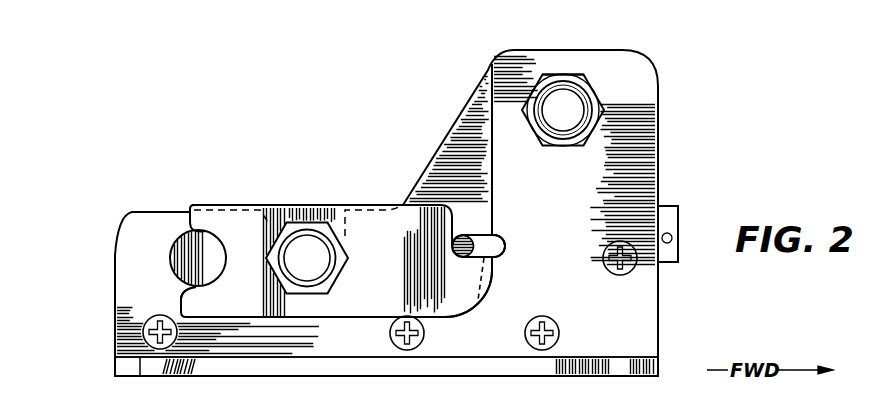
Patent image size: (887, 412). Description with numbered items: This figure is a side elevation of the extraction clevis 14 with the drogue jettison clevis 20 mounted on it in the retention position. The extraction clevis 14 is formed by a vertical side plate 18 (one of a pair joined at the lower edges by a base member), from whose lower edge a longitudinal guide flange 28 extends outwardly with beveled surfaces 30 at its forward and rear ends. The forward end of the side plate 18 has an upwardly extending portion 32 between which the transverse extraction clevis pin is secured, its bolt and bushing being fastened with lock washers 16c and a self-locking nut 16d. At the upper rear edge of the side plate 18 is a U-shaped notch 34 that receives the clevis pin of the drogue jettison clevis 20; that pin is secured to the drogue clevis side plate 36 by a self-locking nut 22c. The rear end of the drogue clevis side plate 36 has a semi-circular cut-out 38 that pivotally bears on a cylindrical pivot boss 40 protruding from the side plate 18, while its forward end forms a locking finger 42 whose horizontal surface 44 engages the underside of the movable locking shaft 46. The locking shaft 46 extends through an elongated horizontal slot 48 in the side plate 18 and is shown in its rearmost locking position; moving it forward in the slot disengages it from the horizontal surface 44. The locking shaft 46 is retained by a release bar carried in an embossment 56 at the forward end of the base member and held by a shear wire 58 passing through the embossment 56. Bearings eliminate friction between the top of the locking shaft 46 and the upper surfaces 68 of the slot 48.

The extraction clevis element 14 is at (670, 105).
The lock washers 16c is at (553, 72).
The self-locking nut 16d is at (577, 74).
The side plate 18 is at (632, 318).
The drogue jettison clevis 20 is at (327, 192).
The self-locking nut 22c is at (346, 270).
The longitudinal guide flange 28 is at (518, 368).
The beveled surfaces 30 is at (698, 367).
The upwardly extending portion 32 is at (630, 68).
The U-shaped notch 34 is at (277, 227).
The drogue clevis side plate 36 is at (378, 318).
The semi-circular cut-out 38 is at (226, 272).
The cylindrical pivot boss 40 is at (191, 261).
The locking finger 42 is at (470, 303).
The horizontal surface 44 is at (481, 262).
The locking shaft 46 is at (466, 238).
The horizontal slot 48 is at (508, 247).
The embossment 56 is at (666, 217).
The shear wire 58 is at (672, 240).
The upper surfaces 68 is at (497, 242).